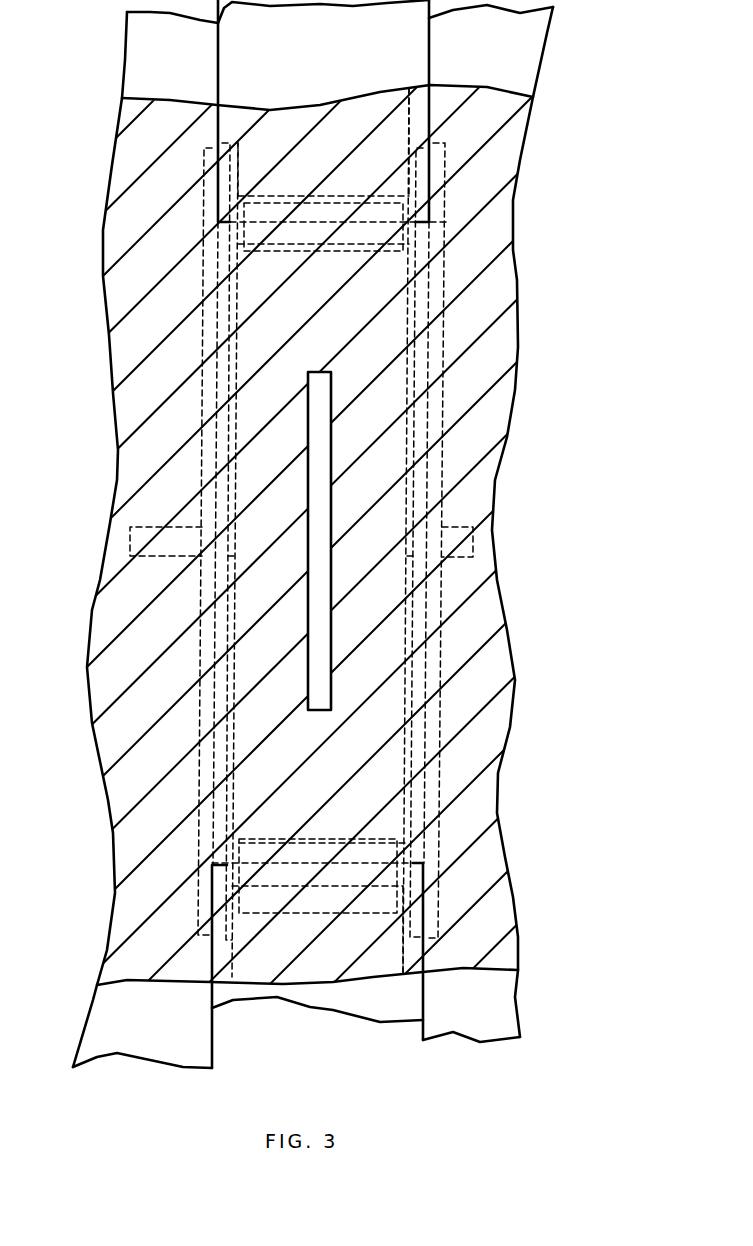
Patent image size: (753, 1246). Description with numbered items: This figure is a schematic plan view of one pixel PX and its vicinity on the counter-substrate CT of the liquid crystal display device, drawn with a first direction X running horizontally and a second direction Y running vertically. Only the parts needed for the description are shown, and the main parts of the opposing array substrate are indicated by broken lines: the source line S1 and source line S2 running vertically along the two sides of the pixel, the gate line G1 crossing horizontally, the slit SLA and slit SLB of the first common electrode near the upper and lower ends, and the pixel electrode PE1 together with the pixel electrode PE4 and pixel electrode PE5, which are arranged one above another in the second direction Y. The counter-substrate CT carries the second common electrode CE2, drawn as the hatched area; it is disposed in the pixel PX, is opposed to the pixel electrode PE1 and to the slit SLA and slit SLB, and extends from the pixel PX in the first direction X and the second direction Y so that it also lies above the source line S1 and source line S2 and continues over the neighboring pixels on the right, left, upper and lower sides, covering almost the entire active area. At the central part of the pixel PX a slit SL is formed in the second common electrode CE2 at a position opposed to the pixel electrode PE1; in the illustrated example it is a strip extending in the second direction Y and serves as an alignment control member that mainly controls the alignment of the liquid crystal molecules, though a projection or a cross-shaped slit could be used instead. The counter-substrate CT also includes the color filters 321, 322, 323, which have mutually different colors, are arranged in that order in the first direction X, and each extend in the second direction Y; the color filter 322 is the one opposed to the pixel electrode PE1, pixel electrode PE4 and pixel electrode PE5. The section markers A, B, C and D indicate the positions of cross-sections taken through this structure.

The source line S1 is at (213, 147).
The source line S2 is at (437, 147).
The slit of the first common electrode SLA is at (278, 197).
The slit of the first common electrode SLB is at (377, 893).
The counter-substrate CT is at (548, 162).
The pixel PX is at (429, 221).
The pixel electrode PE1 is at (408, 327).
The pixel electrode PE4 is at (380, 203).
The pixel electrode PE5 is at (406, 898).
The gate line G1 is at (130, 545).
The slit SL is at (331, 633).
The second common electrode CE2 is at (300, 985).
The color filter 321 is at (150, 1048).
The color filter 322 is at (233, 997).
The color filter 323 is at (458, 1023).
The section line A is at (108, 611).
The section line B is at (530, 611).
The section line C is at (325, 30).
The section line D is at (318, 1040).
The first direction X is at (520, 855).
The second direction Y is at (570, 912).